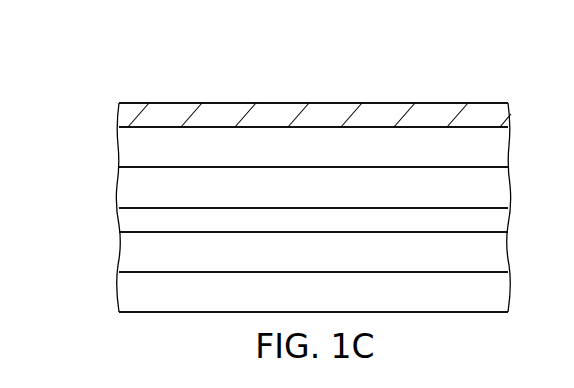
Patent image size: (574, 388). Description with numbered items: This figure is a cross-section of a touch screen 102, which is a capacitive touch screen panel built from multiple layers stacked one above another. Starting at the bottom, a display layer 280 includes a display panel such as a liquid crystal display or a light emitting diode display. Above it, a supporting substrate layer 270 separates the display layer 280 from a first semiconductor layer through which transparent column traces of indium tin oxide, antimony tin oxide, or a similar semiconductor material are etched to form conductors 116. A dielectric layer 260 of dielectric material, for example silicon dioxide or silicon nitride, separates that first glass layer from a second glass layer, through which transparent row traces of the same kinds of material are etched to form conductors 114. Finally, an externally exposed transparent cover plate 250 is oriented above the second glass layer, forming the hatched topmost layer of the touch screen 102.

The touch screen 102 is at (327, 65).
The transparent cover plate 250 is at (117, 117).
The conductors 114 is at (117, 151).
The dielectric layer 260 is at (117, 190).
The conductors 116 is at (121, 220).
The supporting substrate layer 270 is at (119, 250).
The display layer 280 is at (118, 295).